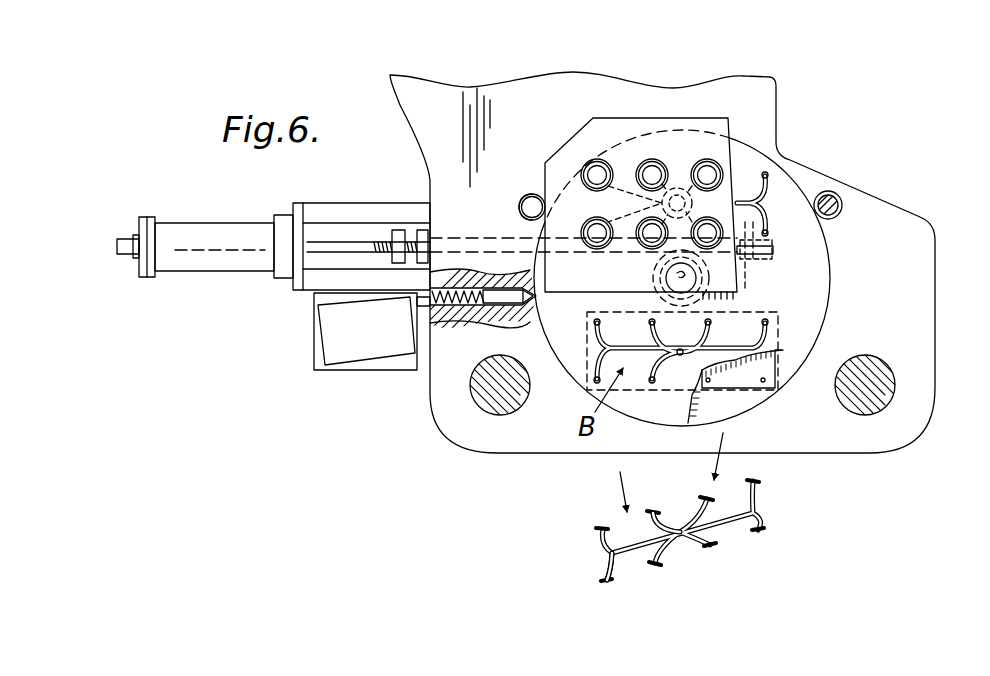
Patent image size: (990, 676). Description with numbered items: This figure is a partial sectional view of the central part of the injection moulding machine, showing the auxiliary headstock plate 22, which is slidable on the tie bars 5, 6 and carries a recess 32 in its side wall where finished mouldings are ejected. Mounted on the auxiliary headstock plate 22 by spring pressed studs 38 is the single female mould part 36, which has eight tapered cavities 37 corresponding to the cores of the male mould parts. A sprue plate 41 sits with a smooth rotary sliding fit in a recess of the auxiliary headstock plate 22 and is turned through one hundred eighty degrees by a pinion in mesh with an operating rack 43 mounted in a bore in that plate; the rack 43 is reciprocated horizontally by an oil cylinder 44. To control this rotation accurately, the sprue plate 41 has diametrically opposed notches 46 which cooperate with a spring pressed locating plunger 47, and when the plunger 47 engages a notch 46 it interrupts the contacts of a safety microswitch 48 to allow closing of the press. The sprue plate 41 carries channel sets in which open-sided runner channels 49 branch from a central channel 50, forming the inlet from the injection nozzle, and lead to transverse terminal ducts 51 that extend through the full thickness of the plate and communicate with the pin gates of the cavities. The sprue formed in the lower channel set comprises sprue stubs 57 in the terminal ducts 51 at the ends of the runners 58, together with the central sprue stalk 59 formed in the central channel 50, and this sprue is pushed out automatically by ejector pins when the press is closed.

The tie bar 5 is at (532, 393).
The tie bar 6 is at (866, 358).
The auxiliary headstock plate 22 is at (922, 312).
The recess 32 is at (892, 207).
The female mould part 36 is at (596, 117).
The tapered cavities 37 is at (645, 157).
The spring pressed studs 38 is at (523, 202).
The sprue plate 41 is at (777, 192).
The operating rack 43 is at (768, 256).
The oil cylinder 44 is at (225, 262).
The notches 46 is at (832, 262).
The spring pressed locating plunger 47 is at (510, 297).
The safety microswitch 48 is at (340, 332).
The runner channels 49 is at (762, 222).
The central channel 50 is at (679, 188).
The terminal ducts 51 is at (776, 321).
The sprue stubs 57 is at (600, 528).
The runners 58 is at (612, 560).
The central sprue stalk 59 is at (676, 527).